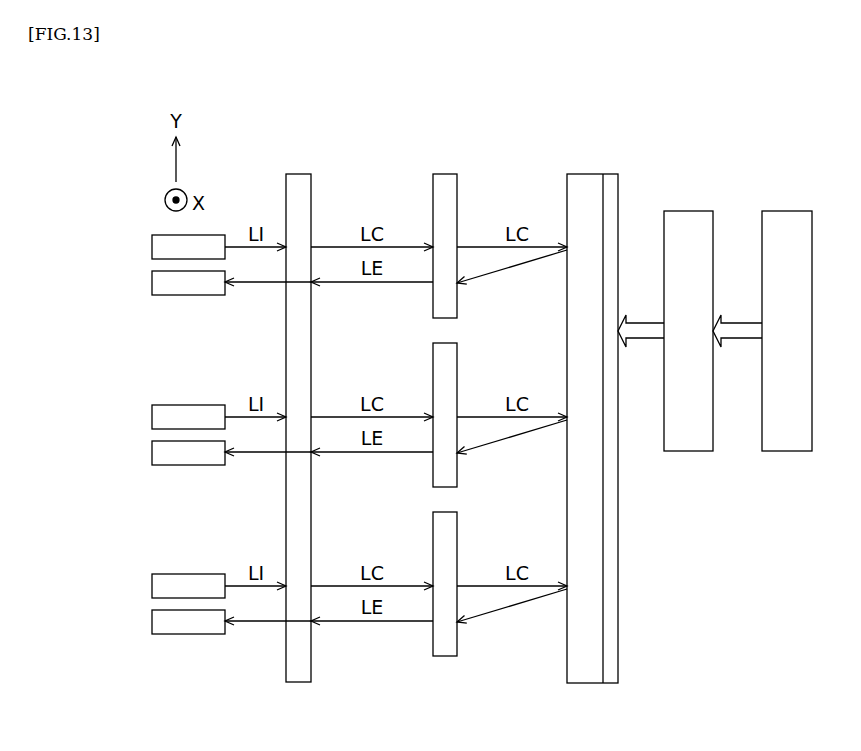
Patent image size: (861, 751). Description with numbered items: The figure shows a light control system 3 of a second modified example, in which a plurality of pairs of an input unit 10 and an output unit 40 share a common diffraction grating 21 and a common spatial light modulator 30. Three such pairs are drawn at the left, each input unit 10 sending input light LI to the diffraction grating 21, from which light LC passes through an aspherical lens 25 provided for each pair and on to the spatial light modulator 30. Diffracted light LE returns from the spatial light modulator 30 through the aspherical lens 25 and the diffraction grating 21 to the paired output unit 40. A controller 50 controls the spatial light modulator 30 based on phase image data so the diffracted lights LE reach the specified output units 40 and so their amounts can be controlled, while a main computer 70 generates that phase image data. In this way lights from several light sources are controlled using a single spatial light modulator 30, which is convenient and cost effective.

The light control system 3 is at (361, 123).
The input unit 10 is at (152, 239).
The diffraction grating 21 is at (311, 174).
The aspherical lens 25 is at (457, 174).
The spatial light modulator 30 is at (618, 174).
The output unit 40 is at (152, 291).
The controller 50 is at (690, 211).
The main computer 70 is at (782, 451).